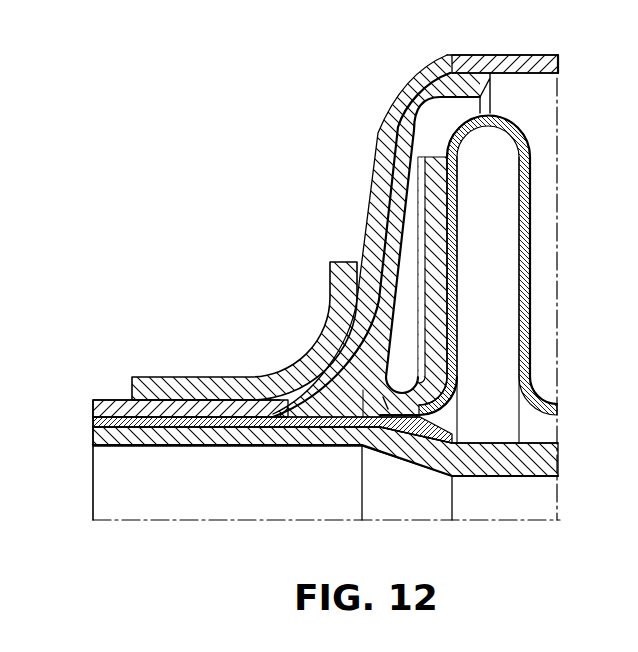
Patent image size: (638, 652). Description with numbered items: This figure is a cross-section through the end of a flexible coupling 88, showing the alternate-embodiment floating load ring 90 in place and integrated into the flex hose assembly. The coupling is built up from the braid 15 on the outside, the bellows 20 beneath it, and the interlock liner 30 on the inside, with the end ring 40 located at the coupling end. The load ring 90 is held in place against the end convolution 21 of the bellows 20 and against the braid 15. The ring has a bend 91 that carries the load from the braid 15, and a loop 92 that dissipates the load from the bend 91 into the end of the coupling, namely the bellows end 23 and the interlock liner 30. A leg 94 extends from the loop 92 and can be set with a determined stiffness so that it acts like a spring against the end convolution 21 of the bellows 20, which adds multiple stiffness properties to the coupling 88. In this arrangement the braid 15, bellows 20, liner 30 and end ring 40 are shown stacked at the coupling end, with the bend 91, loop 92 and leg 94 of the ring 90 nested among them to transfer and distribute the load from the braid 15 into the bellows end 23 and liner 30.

The braid 15 is at (544, 60).
The bellows 20 is at (512, 113).
The end convolution 21 is at (452, 287).
The bellows end 23 is at (276, 428).
The interlock liner 30 is at (95, 438).
The end ring 40 is at (190, 386).
The flexible coupling 88 is at (385, 252).
The floating load ring 90 is at (381, 228).
The bend 91 is at (450, 80).
The loop 92 is at (380, 430).
The leg 94 is at (438, 244).